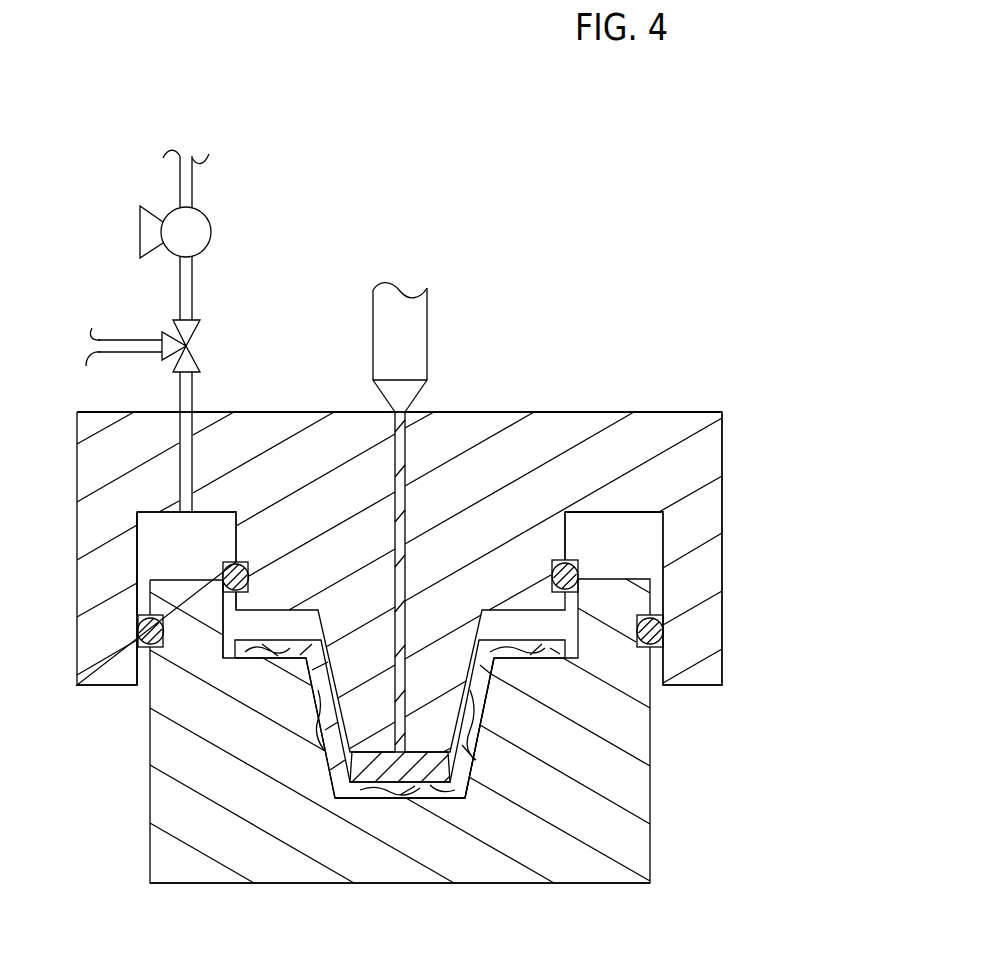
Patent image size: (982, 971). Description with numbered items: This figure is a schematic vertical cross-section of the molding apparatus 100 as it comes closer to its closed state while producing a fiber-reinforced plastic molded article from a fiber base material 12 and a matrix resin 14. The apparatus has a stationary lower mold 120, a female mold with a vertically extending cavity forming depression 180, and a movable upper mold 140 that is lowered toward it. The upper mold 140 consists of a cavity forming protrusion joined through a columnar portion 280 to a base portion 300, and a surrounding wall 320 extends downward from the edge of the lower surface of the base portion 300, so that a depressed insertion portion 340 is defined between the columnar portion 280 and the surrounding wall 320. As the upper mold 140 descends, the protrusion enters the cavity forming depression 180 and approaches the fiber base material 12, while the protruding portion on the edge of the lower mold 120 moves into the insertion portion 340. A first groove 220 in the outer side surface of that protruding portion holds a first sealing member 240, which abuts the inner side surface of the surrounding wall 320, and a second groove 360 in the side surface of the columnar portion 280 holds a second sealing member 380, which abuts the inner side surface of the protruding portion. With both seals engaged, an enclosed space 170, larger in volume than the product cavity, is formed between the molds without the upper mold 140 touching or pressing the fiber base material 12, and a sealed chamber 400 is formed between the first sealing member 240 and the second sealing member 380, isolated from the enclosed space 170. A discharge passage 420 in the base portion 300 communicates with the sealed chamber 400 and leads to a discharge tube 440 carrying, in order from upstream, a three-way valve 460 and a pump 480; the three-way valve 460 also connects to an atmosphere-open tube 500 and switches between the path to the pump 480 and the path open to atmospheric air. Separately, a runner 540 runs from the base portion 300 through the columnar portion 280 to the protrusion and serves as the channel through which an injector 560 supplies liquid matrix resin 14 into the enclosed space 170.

The molding apparatus 100 is at (706, 147).
The fiber base material 12 is at (270, 636).
The matrix resin 14 is at (372, 792).
The lower mold 120 is at (652, 800).
The upper mold 140 is at (658, 412).
The enclosed space 170 is at (421, 783).
The cavity forming depression 180 is at (466, 794).
The first groove 220 is at (137, 623).
The first sealing member 240 is at (147, 630).
The columnar portion 280 is at (555, 539).
The base portion 300 is at (565, 411).
The surrounding wall 320 is at (713, 634).
The insertion portion 340 is at (640, 515).
The second groove 360 is at (222, 583).
The second sealing member 380 is at (222, 569).
The sealed chamber 400 is at (139, 543).
The discharge passage 420 is at (183, 428).
The discharge tube 440 is at (193, 293).
The three-way valve 460 is at (200, 333).
The pump 480 is at (204, 227).
The atmosphere-open tube 500 is at (123, 337).
The runner 540 is at (395, 463).
The injector 560 is at (420, 318).